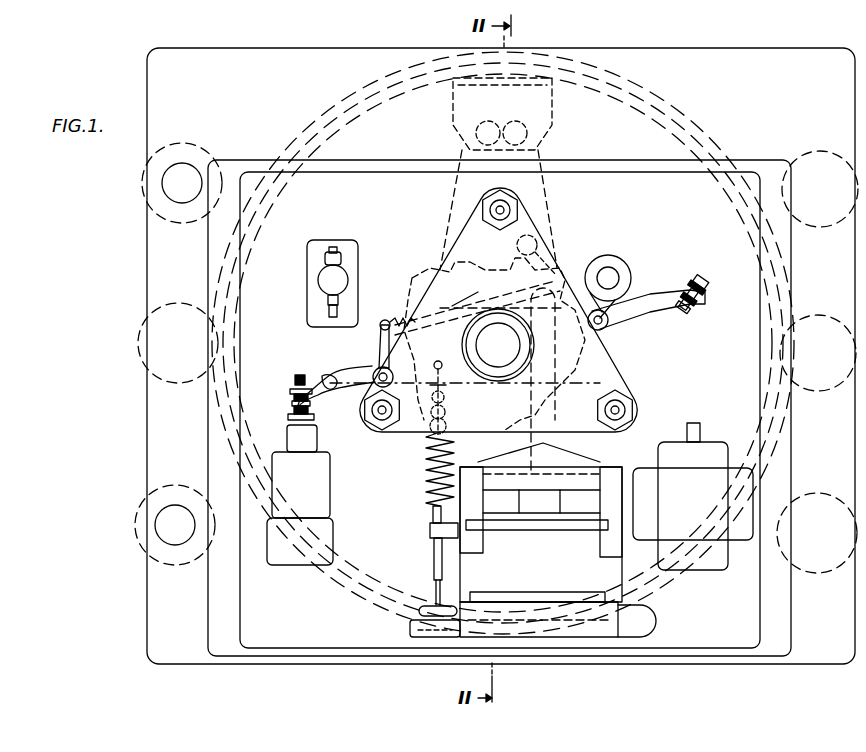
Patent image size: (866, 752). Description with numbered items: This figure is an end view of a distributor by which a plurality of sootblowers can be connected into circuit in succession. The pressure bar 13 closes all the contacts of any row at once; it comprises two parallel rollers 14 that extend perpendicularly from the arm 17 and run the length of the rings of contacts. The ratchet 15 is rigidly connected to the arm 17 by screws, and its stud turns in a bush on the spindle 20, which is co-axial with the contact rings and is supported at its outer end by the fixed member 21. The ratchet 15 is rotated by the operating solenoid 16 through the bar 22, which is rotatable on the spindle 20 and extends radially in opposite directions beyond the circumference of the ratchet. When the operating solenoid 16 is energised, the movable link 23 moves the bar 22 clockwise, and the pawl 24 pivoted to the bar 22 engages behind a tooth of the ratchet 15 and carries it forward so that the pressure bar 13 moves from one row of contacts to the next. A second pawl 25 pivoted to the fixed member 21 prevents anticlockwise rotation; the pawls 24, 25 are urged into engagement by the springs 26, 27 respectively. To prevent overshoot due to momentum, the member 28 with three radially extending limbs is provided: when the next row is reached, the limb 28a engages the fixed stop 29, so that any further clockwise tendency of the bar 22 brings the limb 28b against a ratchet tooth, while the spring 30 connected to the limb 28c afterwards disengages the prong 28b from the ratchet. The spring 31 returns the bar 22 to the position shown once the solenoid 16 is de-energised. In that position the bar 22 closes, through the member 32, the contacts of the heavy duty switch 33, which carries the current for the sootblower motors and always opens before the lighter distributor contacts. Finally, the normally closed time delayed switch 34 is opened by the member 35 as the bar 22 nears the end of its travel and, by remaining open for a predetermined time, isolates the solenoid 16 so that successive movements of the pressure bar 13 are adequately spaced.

The pressure bar 13 is at (548, 106).
The rollers 14 is at (514, 128).
The ratchet 15 is at (460, 285).
The operating solenoid 16 is at (560, 462).
The arm 17 is at (545, 198).
The spindle 20 is at (509, 355).
The fixed member 21 is at (598, 372).
The bar 22 is at (642, 318).
The movable link 23 is at (598, 418).
The pawl 24 is at (605, 330).
The pawl 25 is at (550, 256).
The spring 26 is at (558, 374).
The spring 27 is at (477, 289).
The member having three radially extending limbs 28 is at (382, 348).
The limb 28a is at (331, 376).
The limb 28b is at (410, 422).
The limb 28c is at (385, 320).
The fixed stop 29 is at (338, 277).
The spring 30 is at (440, 306).
The spring 31 is at (428, 480).
The member 32 is at (297, 380).
The heavy duty switch 33 is at (312, 478).
The time delayed switch 34 is at (708, 456).
The member 35 is at (692, 282).